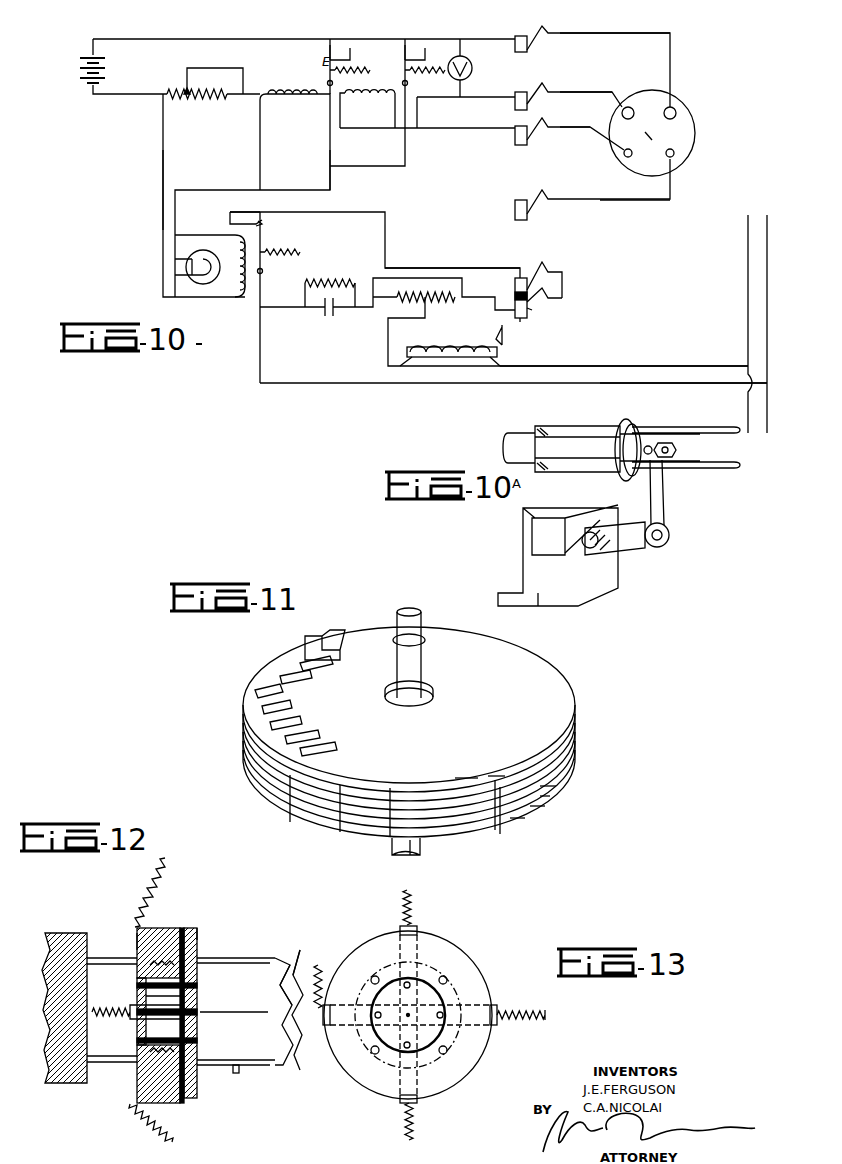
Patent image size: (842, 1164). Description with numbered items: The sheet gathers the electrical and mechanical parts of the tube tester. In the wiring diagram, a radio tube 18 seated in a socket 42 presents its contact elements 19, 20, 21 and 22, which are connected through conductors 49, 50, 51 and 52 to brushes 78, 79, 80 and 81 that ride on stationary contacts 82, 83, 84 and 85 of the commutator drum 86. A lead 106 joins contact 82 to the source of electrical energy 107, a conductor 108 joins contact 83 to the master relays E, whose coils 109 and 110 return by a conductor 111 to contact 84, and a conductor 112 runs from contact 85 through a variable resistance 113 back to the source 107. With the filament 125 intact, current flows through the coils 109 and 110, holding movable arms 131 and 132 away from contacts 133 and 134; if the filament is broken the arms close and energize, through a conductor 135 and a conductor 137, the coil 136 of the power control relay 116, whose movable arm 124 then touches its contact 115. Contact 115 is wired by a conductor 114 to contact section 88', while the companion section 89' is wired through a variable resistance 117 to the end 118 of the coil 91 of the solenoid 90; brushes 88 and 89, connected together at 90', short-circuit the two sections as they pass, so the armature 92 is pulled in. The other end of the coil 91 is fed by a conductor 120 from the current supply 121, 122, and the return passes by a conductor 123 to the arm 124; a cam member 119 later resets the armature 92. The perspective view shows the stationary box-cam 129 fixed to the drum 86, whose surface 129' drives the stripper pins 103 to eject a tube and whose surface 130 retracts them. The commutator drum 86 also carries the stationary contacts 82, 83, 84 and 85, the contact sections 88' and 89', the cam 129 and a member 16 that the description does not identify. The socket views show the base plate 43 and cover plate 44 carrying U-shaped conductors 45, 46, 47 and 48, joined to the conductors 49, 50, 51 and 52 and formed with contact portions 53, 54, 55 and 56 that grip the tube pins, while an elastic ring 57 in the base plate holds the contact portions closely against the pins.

In FIG. 11, the mounting tab 16 is at (425, 846).
In FIG. 10, the radio tube 18 is at (688, 104).
In FIG. 12, the radio tube 18 is at (240, 958).
In FIG. 10, the grid contact 19 is at (676, 154).
In FIG. 12, the grid contact 19 is at (197, 987).
In FIG. 13, the grid contact 19 is at (410, 987).
In FIG. 10, the contact element 20 is at (624, 157).
In FIG. 12, the contact element 20 is at (205, 997).
In FIG. 13, the contact element 20 is at (438, 1018).
In FIG. 10, the filament contact 21 is at (673, 107).
In FIG. 12, the filament contact 21 is at (197, 1013).
In FIG. 13, the filament contact 21 is at (381, 1012).
In FIG. 10, the contact element 22 is at (631, 107).
In FIG. 12, the contact element 22 is at (200, 1040).
In FIG. 13, the contact element 22 is at (405, 1042).
In FIG. 12, the socket 42 is at (212, 905).
In FIG. 12, the base plate 43 is at (181, 930).
In FIG. 12, the cover plate 44 is at (197, 933).
In FIG. 13, the cover plate 44 is at (468, 955).
In FIG. 12, the conductor 45 is at (160, 930).
In FIG. 13, the conductor 45 is at (420, 940).
In FIG. 13, the conductor 46 is at (480, 1008).
In FIG. 13, the conductor 47 is at (440, 1090).
In FIG. 12, the conductor 48 is at (296, 1030).
In FIG. 13, the conductor 48 is at (323, 1025).
In FIG. 10, the conductor 49 is at (625, 200).
In FIG. 12, the conductor 49 is at (159, 887).
In FIG. 13, the conductor 49 is at (410, 893).
In FIG. 10, the conductor 50 is at (598, 133).
In FIG. 12, the conductor 50 is at (113, 1008).
In FIG. 13, the conductor 50 is at (532, 1019).
In FIG. 10, the conductor 51 is at (596, 92).
In FIG. 12, the conductor 51 is at (148, 1130).
In FIG. 13, the conductor 51 is at (415, 1125).
In FIG. 10, the conductor 52 is at (588, 32).
In FIG. 12, the conductor 52 is at (301, 956).
In FIG. 13, the conductor 52 is at (318, 965).
In FIG. 13, the contact portion 53 is at (420, 985).
In FIG. 13, the contact portion 54 is at (440, 1020).
In FIG. 13, the contact portion 55 is at (428, 1045).
In FIG. 13, the contact portion 56 is at (393, 1018).
In FIG. 12, the ring 57 is at (140, 950).
In FIG. 10, the brush 78 is at (548, 38).
In FIG. 10, the brush 79 is at (548, 95).
In FIG. 10, the brush 80 is at (548, 130).
In FIG. 10, the brush 81 is at (548, 202).
In FIG. 10, the stationary contact 82 is at (515, 52).
In FIG. 11, the stationary contact 82 is at (556, 790).
In FIG. 10, the stationary contact 83 is at (515, 105).
In FIG. 11, the stationary contact 83 is at (548, 802).
In FIG. 10, the stationary contact 84 is at (515, 140).
In FIG. 11, the stationary contact 84 is at (525, 812).
In FIG. 10, the stationary contact 85 is at (515, 215).
In FIG. 11, the stationary contact 85 is at (512, 822).
In FIG. 11, the drum 86 is at (562, 690).
In FIG. 10, the brush 88 is at (560, 280).
In FIG. 10, the contact section 88' is at (525, 282).
In FIG. 11, the contact section 88' is at (472, 758).
In FIG. 10, the brush 89 is at (563, 318).
In FIG. 10, the contact section 89' is at (524, 333).
In FIG. 11, the contact section 89' is at (504, 757).
In FIG. 10, the solenoid 90 is at (450, 376).
In FIG. 10, the connection 90' is at (570, 296).
In FIG. 10, the coil 91 is at (460, 358).
In FIG. 10, the armature 92 is at (490, 360).
In FIG. 10A, the stripper pins 103 is at (693, 430).
In FIG. 10, the lead 106 is at (455, 39).
In FIG. 10, the source of electrical energy 107 is at (108, 68).
In FIG. 10, the conductor 108 is at (445, 97).
In FIG. 10, the coil 109 is at (372, 97).
In FIG. 10, the coil 110 is at (298, 98).
In FIG. 10, the conductor 111 is at (436, 130).
In FIG. 10, the conductor 112 is at (262, 150).
In FIG. 10, the variable resistance 113 is at (197, 98).
In FIG. 10, the conductor 114 is at (460, 268).
In FIG. 10, the contact 115 is at (262, 223).
In FIG. 10, the relay 116 is at (240, 306).
In FIG. 10, the variable resistance 117 is at (425, 303).
In FIG. 10, the end of coil 118 is at (408, 358).
In FIG. 10, the cam member 119 is at (504, 345).
In FIG. 10, the conductor 120 is at (600, 367).
In FIG. 10, the source of current supply 121 is at (746, 318).
In FIG. 10, the power line 122 is at (767, 312).
In FIG. 10, the conductor 123 is at (665, 384).
In FIG. 10, the movable arm 124 is at (260, 243).
In FIG. 10, the filament 125 is at (652, 136).
In FIG. 10A, the cam 129 is at (539, 555).
In FIG. 11, the cam 129 is at (336, 628).
In FIG. 10A, the cam surface 129' is at (620, 556).
In FIG. 10A, the cam surface 130 is at (606, 532).
In FIG. 10, the movable arm 131 is at (350, 60).
In FIG. 10, the movable arm 132 is at (423, 60).
In FIG. 10, the contact 133 is at (345, 48).
In FIG. 10, the contact 134 is at (420, 48).
In FIG. 10, the conductor 135 is at (330, 183).
In FIG. 10, the coil 136 is at (233, 250).
In FIG. 10, the conductor 137 is at (163, 190).